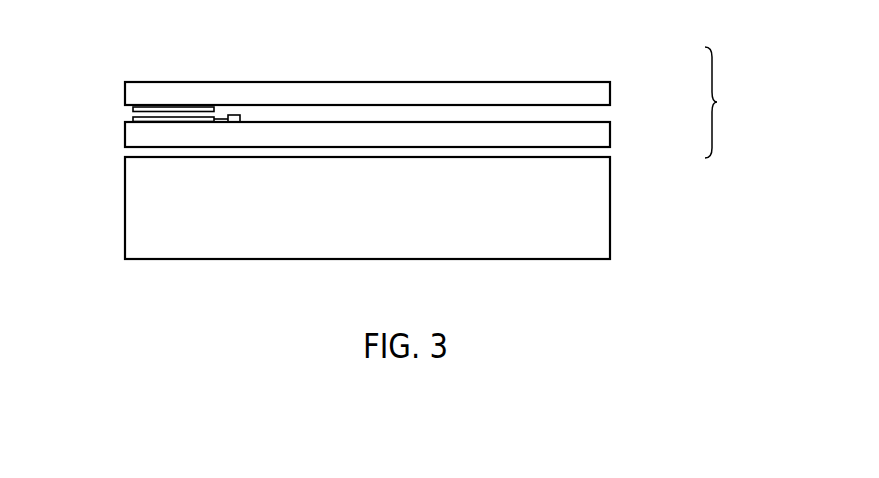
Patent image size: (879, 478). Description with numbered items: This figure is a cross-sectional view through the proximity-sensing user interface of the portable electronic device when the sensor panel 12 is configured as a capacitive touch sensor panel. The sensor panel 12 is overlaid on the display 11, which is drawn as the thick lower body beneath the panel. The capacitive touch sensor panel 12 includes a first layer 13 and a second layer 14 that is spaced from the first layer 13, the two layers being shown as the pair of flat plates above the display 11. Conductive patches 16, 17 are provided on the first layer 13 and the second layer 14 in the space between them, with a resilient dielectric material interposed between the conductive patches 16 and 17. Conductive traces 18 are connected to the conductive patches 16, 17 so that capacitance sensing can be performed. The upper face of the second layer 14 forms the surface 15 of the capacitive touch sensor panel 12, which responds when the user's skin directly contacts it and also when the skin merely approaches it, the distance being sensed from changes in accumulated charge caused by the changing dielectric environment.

The display 11 is at (610, 243).
The sensor panel 12 is at (726, 102).
The first layer 13 is at (610, 137).
The second layer 14 is at (610, 97).
The surface 15 is at (587, 82).
The conductive patch 16 is at (133, 120).
The conductive patch 17 is at (133, 109).
The conductive trace 18 is at (232, 115).